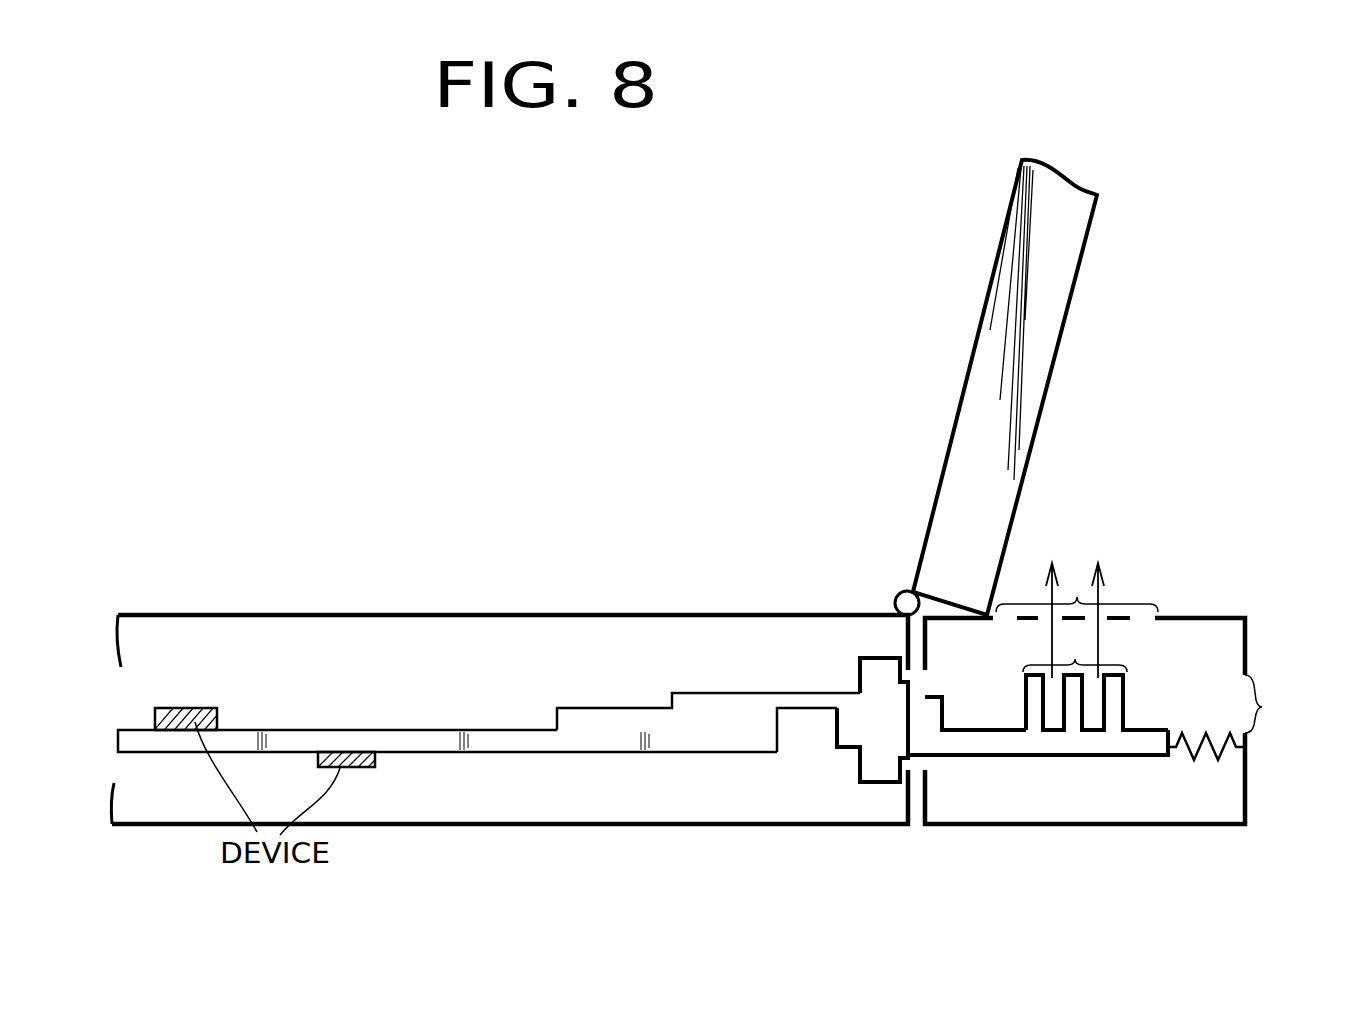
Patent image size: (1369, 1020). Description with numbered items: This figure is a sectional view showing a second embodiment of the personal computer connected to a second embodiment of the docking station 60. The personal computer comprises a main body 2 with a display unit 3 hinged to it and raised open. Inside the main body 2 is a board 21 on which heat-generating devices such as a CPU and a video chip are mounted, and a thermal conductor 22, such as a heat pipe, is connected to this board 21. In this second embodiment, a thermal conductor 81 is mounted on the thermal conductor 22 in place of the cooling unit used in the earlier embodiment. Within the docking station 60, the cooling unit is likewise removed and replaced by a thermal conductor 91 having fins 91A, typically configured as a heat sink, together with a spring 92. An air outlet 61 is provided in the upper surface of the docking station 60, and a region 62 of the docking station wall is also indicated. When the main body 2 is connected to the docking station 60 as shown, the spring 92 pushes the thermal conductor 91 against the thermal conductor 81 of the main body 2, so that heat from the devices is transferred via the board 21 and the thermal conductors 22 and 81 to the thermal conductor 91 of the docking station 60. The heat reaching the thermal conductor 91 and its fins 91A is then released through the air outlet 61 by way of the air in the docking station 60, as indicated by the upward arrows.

The main body 2 is at (720, 825).
The display unit 3 is at (968, 373).
The board 21 is at (508, 737).
The thermal conductor 22 is at (615, 723).
The docking station 60 is at (992, 825).
The air outlet 61 is at (1077, 598).
The detection window 62 is at (1264, 707).
The thermal conductor 81 is at (878, 785).
The thermal conductor 91 is at (1058, 740).
The fins 91A is at (1075, 659).
The spring 92 is at (1203, 753).